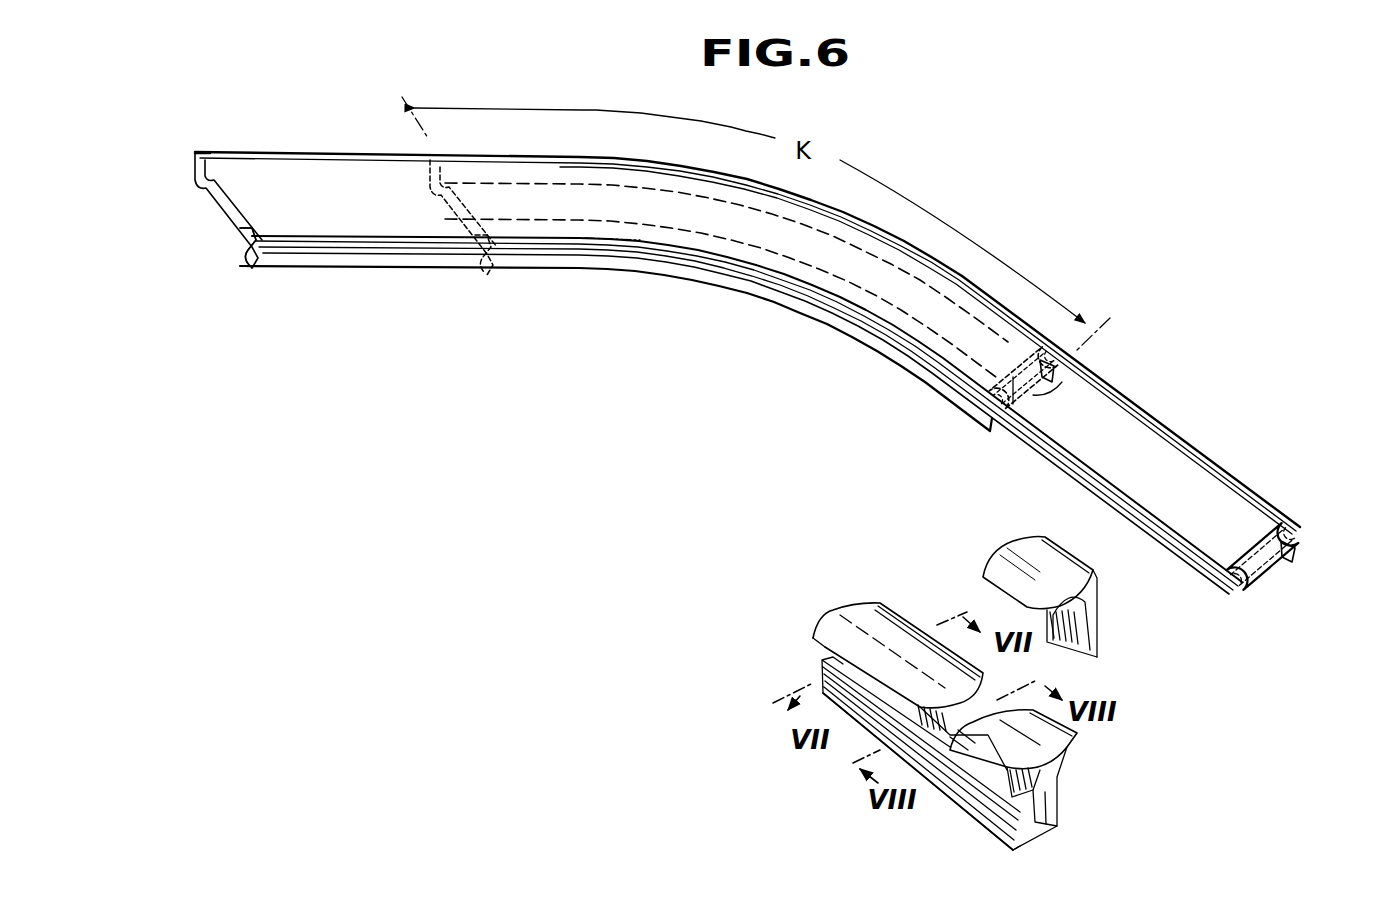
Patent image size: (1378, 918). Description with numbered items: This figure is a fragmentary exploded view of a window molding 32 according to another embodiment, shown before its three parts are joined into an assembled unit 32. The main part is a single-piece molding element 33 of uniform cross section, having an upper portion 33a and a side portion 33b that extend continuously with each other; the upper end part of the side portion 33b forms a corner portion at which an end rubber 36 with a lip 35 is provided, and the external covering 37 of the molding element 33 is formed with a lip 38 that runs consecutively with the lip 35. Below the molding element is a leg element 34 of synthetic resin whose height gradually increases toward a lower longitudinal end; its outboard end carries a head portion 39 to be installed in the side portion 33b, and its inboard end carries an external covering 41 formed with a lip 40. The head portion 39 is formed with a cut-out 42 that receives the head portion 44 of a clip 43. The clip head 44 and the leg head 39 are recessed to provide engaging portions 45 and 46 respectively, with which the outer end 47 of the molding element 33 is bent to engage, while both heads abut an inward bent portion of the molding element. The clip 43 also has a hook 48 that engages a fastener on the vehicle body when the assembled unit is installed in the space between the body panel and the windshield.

The window molding 32 is at (771, 374).
The molding element 33 is at (347, 343).
The upper portion 33a is at (358, 239).
The side portion 33b is at (622, 241).
The leg element 34 is at (995, 716).
The lip 35 is at (863, 343).
The end rubber 36 is at (1098, 375).
The external covering 37 is at (229, 166).
The lip 38 is at (252, 268).
The head portion 39 is at (865, 615).
The lip 40 is at (1013, 850).
The external covering 41 is at (1060, 825).
The cut-out 42 is at (960, 735).
The clip 43 is at (1085, 603).
The head portion 44 is at (1015, 557).
The engaging portion 45 is at (1097, 578).
The engaging portion 46 is at (1080, 750).
The outer end 47 is at (1292, 560).
The hook 48 is at (1097, 657).